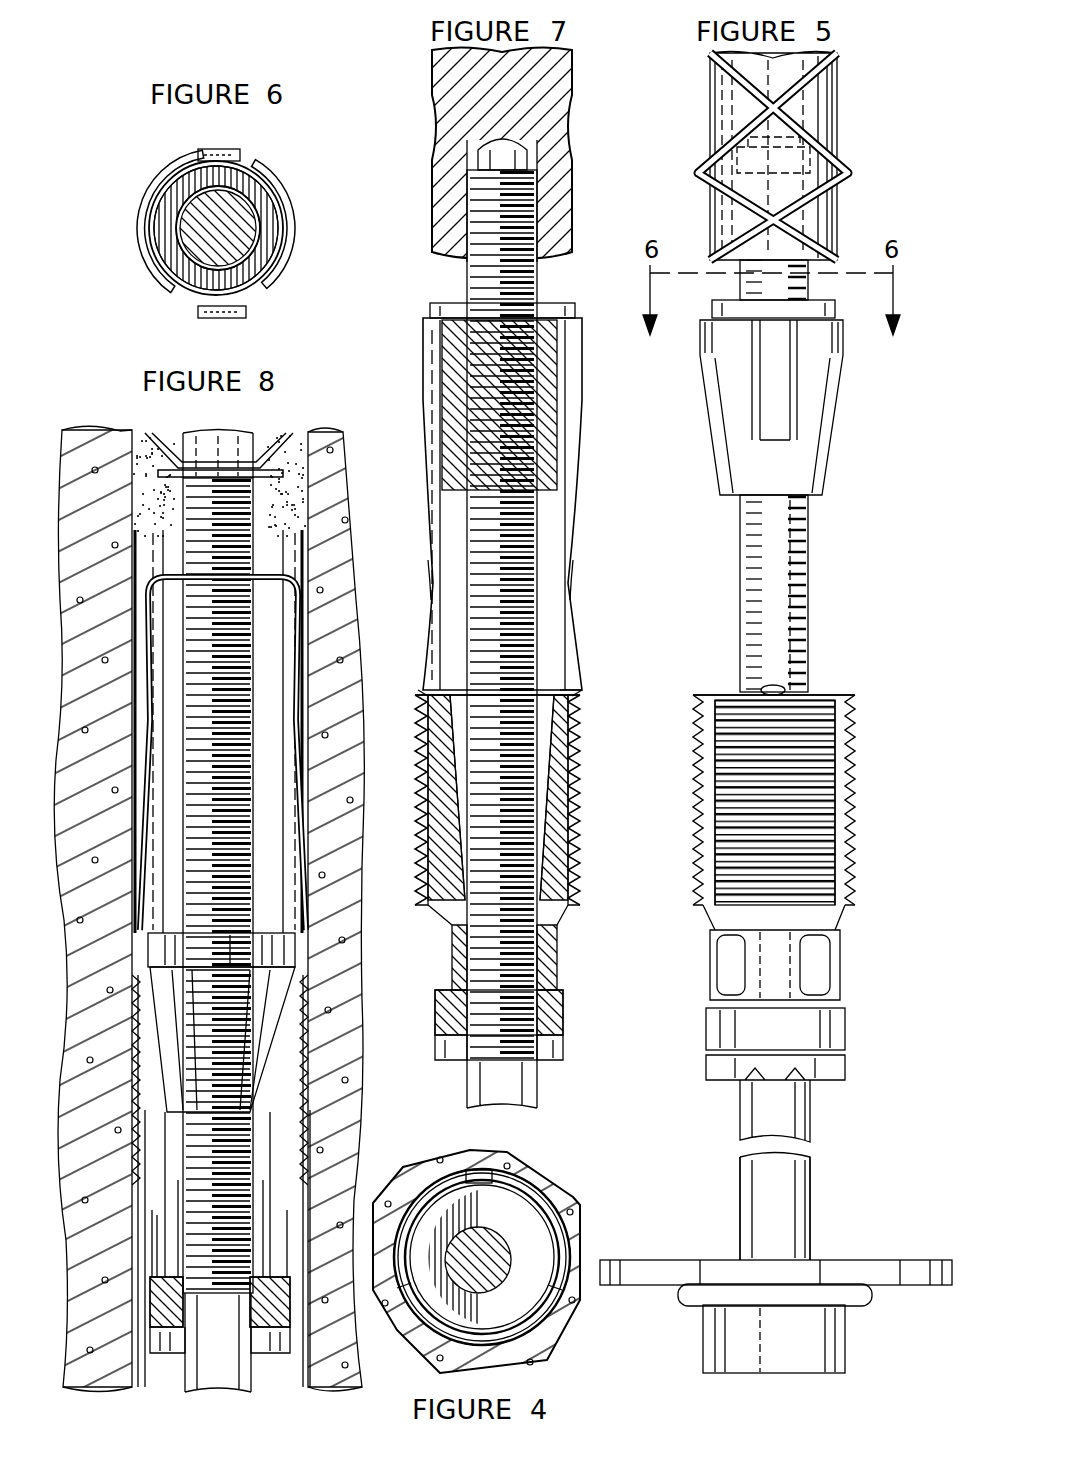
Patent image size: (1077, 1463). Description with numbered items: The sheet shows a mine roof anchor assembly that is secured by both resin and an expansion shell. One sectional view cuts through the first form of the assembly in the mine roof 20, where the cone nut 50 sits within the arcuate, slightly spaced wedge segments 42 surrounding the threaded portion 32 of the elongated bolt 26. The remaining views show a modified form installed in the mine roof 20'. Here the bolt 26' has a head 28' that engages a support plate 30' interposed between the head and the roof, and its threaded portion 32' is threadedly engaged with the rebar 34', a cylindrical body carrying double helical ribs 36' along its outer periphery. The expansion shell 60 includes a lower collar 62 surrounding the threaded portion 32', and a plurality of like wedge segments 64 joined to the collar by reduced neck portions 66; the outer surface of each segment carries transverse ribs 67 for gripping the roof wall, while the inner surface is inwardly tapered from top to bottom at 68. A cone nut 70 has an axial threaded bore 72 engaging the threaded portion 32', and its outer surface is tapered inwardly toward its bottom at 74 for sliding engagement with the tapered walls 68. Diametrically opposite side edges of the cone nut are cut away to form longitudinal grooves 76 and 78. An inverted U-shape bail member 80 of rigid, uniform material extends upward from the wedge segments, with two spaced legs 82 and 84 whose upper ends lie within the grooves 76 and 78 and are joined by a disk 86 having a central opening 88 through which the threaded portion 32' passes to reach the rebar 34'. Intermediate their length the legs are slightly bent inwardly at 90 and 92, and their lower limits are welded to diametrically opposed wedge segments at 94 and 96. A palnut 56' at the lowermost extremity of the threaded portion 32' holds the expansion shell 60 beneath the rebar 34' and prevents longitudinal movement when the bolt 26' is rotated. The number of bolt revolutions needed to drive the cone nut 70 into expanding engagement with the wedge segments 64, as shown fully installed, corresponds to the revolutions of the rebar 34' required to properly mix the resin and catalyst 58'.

In FIG. 4, the mine roof 20 is at (474, 1265).
In FIG. 8, the mine roof 20' is at (209, 908).
In FIG. 5, the elongated bolt 26 is at (775, 1208).
In FIG. 8, the bolt 26' is at (218, 1358).
In FIG. 7, the bolt 26' is at (542, 1092).
In FIG. 5, the bolt 26' is at (812, 1170).
In FIG. 5, the head 28' is at (755, 1328).
In FIG. 5, the support plate 30' is at (776, 1302).
In FIG. 4, the threaded portion 32 is at (518, 1295).
In FIG. 8, the threaded portion 32' is at (241, 885).
In FIG. 7, the threaded portion 32' is at (547, 615).
In FIG. 5, the threaded portion 32' is at (744, 476).
In FIG. 6, the threaded portion 32' is at (250, 208).
In FIG. 8, the rebar 34' is at (226, 435).
In FIG. 7, the rebar 34' is at (531, 154).
In FIG. 5, the rebar 34' is at (808, 155).
In FIG. 8, the double helical ribs 36' is at (219, 435).
In FIG. 5, the double helical ribs 36' is at (802, 156).
In FIG. 4, the wedge segments 42 is at (437, 1190).
In FIG. 4, the cone nut 50 is at (528, 1210).
In FIG. 8, the palnut 56' is at (250, 1348).
In FIG. 7, the palnut 56' is at (539, 1055).
In FIG. 5, the palnut 56' is at (811, 1063).
In FIG. 8, the resin and catalyst 58' is at (262, 478).
In FIG. 7, the expansion shell 60 is at (592, 740).
In FIG. 5, the expansion shell 60 is at (860, 720).
In FIG. 8, the lower collar 62 is at (290, 1308).
In FIG. 7, the lower collar 62 is at (566, 1010).
In FIG. 5, the lower collar 62 is at (775, 1029).
In FIG. 8, the wedge segments 64 is at (308, 1040).
In FIG. 7, the wedge segments 64 is at (555, 850).
In FIG. 5, the wedge segments 64 is at (820, 800).
In FIG. 6, the wedge segments 64 is at (162, 180).
In FIG. 8, the reduced neck portions 66 is at (288, 1232).
In FIG. 7, the reduced neck portions 66 is at (560, 965).
In FIG. 5, the reduced neck portions 66 is at (755, 982).
In FIG. 7, the transverse ribs 67 is at (420, 866).
In FIG. 5, the transverse ribs 67 is at (855, 852).
In FIG. 6, the transverse ribs 67 is at (148, 208).
In FIG. 7, the tapered inner surface 68 is at (550, 800).
In FIG. 8, the cone nut 70 is at (228, 1042).
In FIG. 7, the cone nut 70 is at (545, 476).
In FIG. 7, the axial threaded bore 72 is at (530, 400).
In FIG. 5, the tapered outer surface 74 is at (832, 430).
In FIG. 6, the longitudinal groove 76 is at (248, 316).
In FIG. 6, the longitudinal groove 78 is at (195, 150).
In FIG. 8, the bail member 80 is at (318, 582).
In FIG. 8, the leg 82 is at (140, 792).
In FIG. 7, the leg 82 is at (432, 510).
In FIG. 8, the leg 84 is at (302, 792).
In FIG. 7, the leg 84 is at (576, 510).
In FIG. 5, the leg 84 is at (765, 390).
In FIG. 7, the disk 86 is at (552, 300).
In FIG. 5, the disk 86 is at (832, 302).
In FIG. 6, the disk 86 is at (276, 250).
In FIG. 6, the central opening 88 is at (180, 222).
In FIG. 7, the inward bend 90 is at (431, 585).
In FIG. 7, the inward bend 92 is at (571, 592).
In FIG. 5, the inward bend 92 is at (800, 604).
In FIG. 7, the weld 94 is at (582, 690).
In FIG. 5, the weld 94 is at (784, 686).
In FIG. 7, the weld 96 is at (422, 690).